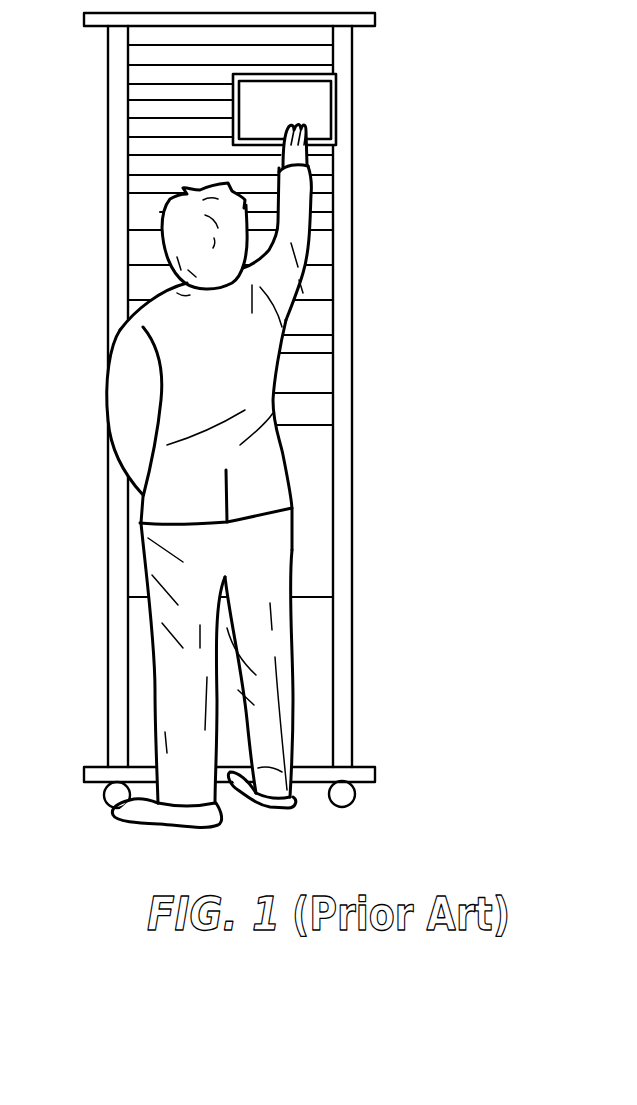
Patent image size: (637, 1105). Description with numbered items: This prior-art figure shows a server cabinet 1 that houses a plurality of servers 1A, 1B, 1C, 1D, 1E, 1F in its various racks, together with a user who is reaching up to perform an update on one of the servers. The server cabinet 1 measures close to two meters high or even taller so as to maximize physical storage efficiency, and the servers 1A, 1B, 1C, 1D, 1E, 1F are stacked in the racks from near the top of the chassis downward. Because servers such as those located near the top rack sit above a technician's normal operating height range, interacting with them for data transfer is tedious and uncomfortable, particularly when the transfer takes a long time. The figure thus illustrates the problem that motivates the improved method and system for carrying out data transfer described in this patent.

The server cabinet 1 is at (406, 197).
The server 1A is at (128, 75).
The server 1B is at (128, 112).
The server 1C is at (128, 130).
The server 1D is at (128, 165).
The server 1E is at (128, 213).
The server 1F is at (128, 250).